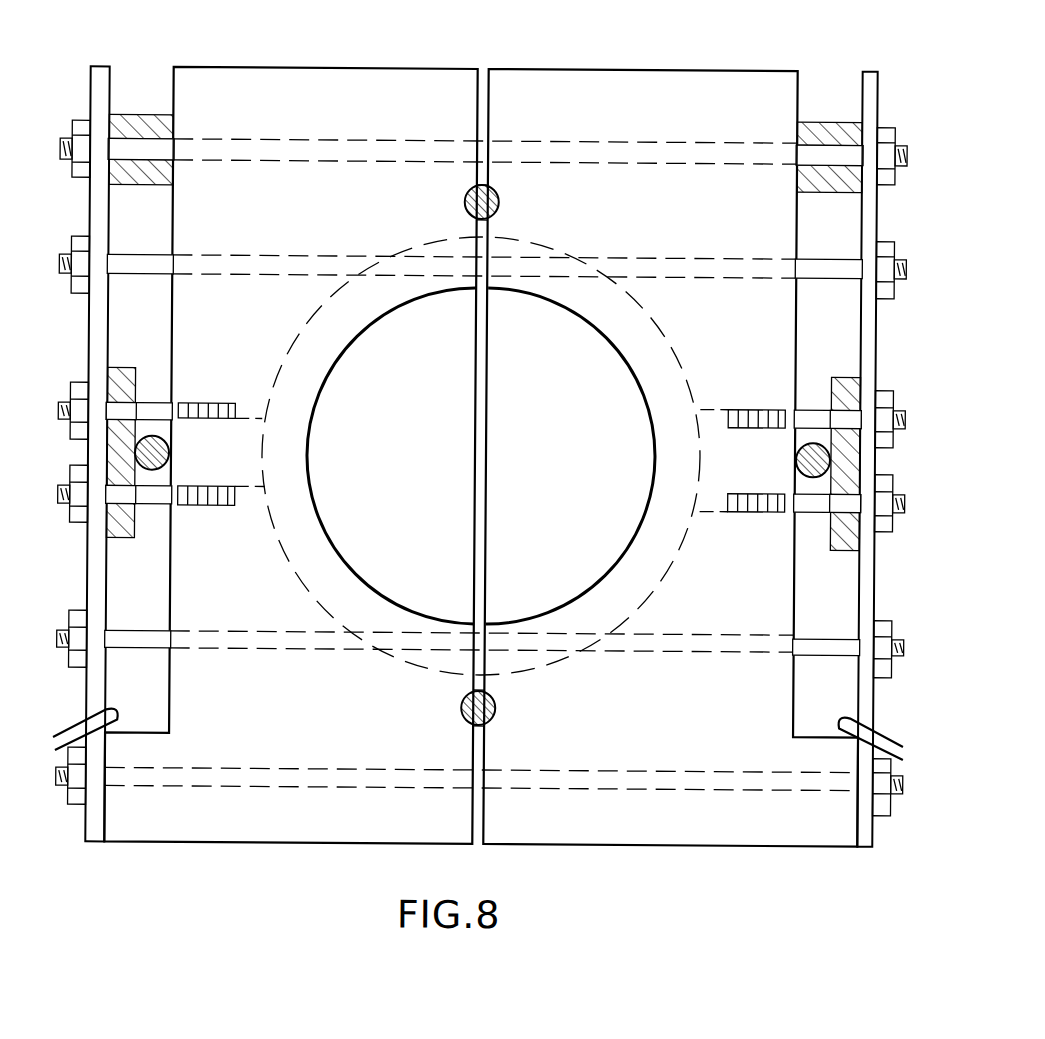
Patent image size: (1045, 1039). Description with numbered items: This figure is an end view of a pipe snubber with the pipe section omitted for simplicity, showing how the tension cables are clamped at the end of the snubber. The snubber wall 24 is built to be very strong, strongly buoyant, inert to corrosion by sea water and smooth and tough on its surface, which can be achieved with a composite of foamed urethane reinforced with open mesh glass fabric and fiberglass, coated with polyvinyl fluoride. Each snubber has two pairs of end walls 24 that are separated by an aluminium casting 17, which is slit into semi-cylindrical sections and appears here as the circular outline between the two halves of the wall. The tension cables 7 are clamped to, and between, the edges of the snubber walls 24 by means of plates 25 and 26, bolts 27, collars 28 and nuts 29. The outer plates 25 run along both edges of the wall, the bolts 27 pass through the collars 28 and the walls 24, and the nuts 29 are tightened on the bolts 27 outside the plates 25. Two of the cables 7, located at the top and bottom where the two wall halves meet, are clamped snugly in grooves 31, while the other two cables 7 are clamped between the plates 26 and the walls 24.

The tension cable 7 is at (494, 196).
The aluminium casting 17 is at (300, 586).
The snubber wall 24 is at (318, 70).
The plate 25 is at (98, 70).
The plate 26 is at (132, 372).
The bolt 27 is at (830, 150).
The collar 28 is at (151, 126).
The nut 29 is at (76, 622).
The groove 31 is at (465, 210).